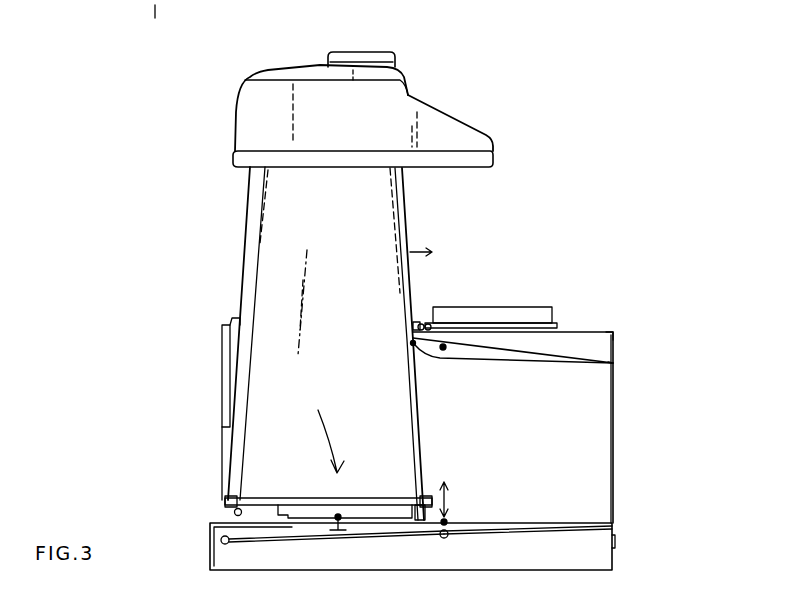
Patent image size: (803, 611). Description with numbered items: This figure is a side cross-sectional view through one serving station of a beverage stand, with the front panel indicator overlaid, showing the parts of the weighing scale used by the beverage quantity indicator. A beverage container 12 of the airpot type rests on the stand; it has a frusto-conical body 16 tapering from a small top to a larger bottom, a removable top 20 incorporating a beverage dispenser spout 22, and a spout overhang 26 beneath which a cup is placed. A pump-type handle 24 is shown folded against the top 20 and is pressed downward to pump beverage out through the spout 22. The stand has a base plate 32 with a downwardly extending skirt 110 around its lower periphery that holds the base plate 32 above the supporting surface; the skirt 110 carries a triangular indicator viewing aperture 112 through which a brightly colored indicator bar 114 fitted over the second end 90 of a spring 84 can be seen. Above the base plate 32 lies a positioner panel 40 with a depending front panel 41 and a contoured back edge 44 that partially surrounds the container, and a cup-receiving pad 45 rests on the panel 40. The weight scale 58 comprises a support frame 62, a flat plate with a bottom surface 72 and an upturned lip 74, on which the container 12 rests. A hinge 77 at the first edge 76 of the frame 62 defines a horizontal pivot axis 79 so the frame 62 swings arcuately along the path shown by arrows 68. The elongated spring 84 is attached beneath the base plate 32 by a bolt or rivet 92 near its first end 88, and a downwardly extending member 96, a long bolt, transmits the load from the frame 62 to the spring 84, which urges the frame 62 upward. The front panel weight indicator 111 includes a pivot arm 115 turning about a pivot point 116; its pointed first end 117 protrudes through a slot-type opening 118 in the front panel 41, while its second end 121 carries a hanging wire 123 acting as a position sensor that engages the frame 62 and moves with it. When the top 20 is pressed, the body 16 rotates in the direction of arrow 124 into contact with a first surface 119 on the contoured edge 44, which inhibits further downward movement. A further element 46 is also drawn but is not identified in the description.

The beverage container 12 is at (307, 68).
The top 20 is at (359, 121).
The pump-type handle 24 is at (378, 52).
The beverage dispenser spout 22 is at (447, 128).
The spout overhang 26 is at (466, 168).
The body 16 is at (245, 252).
The arrow 124 is at (417, 250).
The side bracket 46 is at (222, 358).
The positioner panel 40 is at (567, 344).
The front panel 41 is at (615, 378).
The slot-type opening 118 is at (617, 348).
The cup-receiving pad 45 is at (534, 307).
The first surface 119 is at (428, 323).
The contoured back edge 44 is at (413, 325).
The second end of pivot arm 121 is at (410, 343).
The front panel weight indicator 111 is at (582, 332).
The pivot arm 115 is at (498, 357).
The pivot point 116 is at (445, 349).
The first end of pivot arm 117 is at (615, 363).
The wire 123 is at (417, 407).
The weight scale 58 is at (318, 429).
The beverage dispenser support frame 62 is at (398, 498).
The first edge 76 is at (225, 500).
The pivot axis 79 is at (237, 500).
The hinge 77 is at (230, 515).
The second end of spring 90 is at (247, 537).
The bottom surface 72 is at (340, 515).
The downwardly-extending member 96 is at (331, 533).
The upturned lip 74 is at (436, 478).
The arrows 68 is at (448, 504).
The base plate 32 is at (552, 528).
The skirt 110 is at (614, 547).
The indicator viewing aperture 112 is at (210, 553).
The indicator bar 114 is at (229, 545).
The spring 84 is at (377, 537).
The first end of spring 88 is at (460, 531).
The bolt or rivet 92 is at (446, 538).